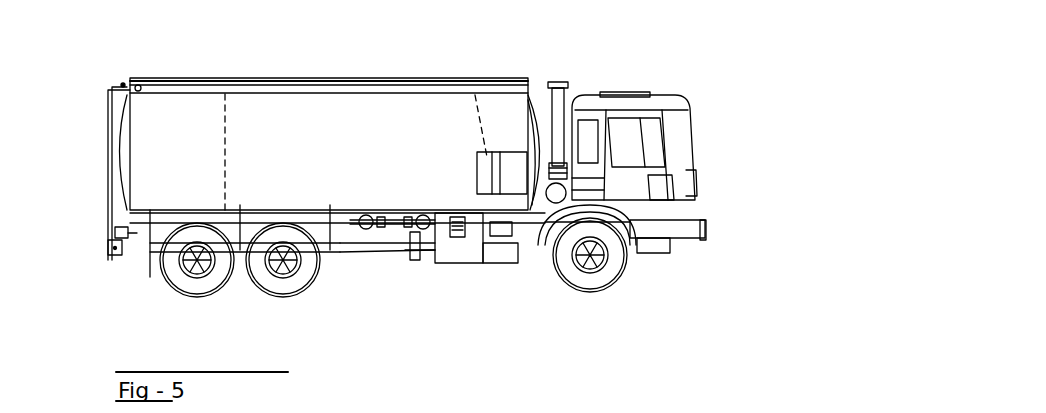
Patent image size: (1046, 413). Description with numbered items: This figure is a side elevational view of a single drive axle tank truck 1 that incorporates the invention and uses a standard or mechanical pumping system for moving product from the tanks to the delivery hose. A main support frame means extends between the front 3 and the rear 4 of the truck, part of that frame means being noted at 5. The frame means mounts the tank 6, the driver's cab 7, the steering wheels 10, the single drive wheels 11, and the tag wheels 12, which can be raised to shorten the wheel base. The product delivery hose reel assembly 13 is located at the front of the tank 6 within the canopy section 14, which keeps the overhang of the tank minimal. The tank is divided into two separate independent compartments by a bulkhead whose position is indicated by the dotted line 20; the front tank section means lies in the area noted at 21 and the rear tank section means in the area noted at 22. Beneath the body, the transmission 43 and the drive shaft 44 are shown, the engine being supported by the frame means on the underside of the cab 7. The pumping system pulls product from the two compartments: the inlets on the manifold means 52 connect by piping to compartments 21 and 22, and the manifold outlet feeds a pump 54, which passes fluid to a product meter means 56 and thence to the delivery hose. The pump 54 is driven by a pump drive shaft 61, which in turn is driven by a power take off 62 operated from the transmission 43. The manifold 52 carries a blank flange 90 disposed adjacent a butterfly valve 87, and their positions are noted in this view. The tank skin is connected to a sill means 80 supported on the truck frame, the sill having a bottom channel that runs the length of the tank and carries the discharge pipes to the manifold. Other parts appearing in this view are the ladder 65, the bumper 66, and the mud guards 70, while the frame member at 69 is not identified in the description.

The tank truck 1 is at (403, 63).
The front of the truck 3 is at (708, 153).
The rear of the truck 4 is at (105, 164).
The frame means 5 is at (115, 232).
The tank 6 is at (338, 156).
The driver's cab 7 is at (636, 92).
The steering wheels 10 is at (585, 275).
The single drive wheels 11 is at (280, 283).
The tag wheels 12 is at (202, 285).
The hose reel assembly 13 is at (503, 158).
The canopy section 14 is at (538, 140).
The bulkhead position (dotted line) 20 is at (207, 133).
The front tank section means 21 is at (410, 156).
The rear tank section means 22 is at (185, 166).
The transmission 43 is at (630, 287).
The drive shaft 44 is at (320, 275).
The manifold means 52 is at (396, 224).
The pump 54 is at (415, 262).
The product meter means 56 is at (517, 250).
The pump drive shaft 61 is at (472, 262).
The power take off 62 is at (500, 222).
The ladder 65 is at (122, 87).
The bumper 66 is at (110, 258).
The frame rail 69 is at (330, 213).
The mud guards 70 is at (150, 262).
The sill means 80 is at (386, 214).
The butterfly valve 87 is at (418, 214).
The blank flange 90 is at (368, 214).